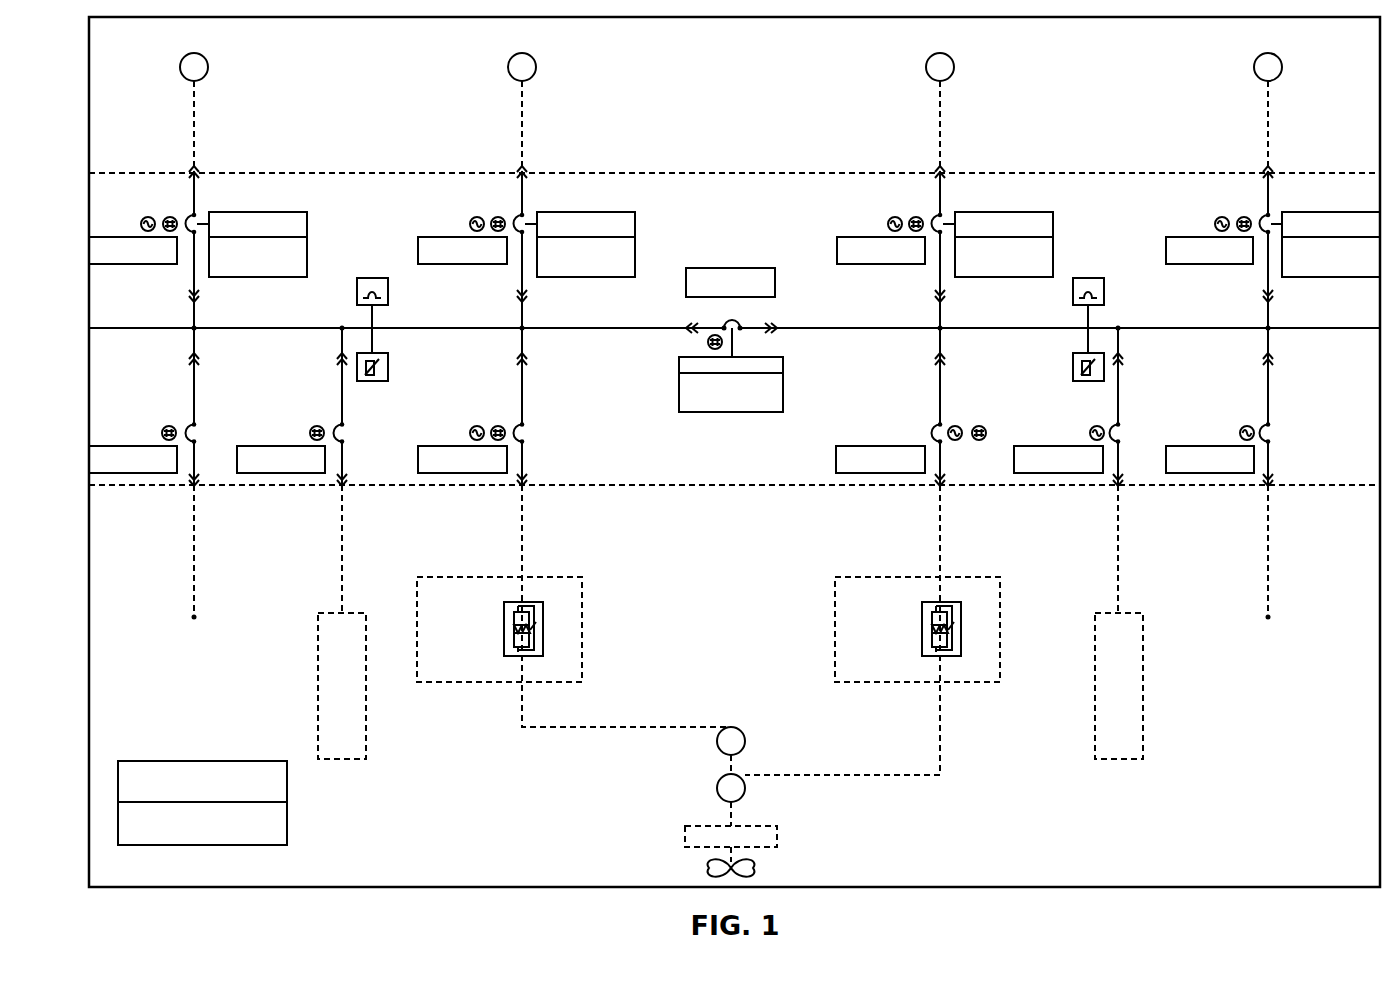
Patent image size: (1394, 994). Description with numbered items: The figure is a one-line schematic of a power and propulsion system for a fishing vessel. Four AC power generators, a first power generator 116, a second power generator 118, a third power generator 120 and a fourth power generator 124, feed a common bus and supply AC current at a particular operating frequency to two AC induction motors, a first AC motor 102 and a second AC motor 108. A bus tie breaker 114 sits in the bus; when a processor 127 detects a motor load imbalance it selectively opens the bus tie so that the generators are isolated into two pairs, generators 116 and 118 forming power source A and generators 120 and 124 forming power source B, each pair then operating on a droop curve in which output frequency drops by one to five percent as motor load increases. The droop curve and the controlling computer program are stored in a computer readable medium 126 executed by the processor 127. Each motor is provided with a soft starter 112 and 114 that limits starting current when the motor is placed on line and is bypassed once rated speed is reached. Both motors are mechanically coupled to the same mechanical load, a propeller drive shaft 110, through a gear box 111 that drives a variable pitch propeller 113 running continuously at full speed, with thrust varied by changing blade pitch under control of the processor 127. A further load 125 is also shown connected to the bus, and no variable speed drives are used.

The first AC motor 102 is at (717, 740).
The second AC motor 108 is at (745, 790).
The propeller drive shaft 110 is at (728, 812).
The gear box 111 is at (767, 835).
The soft starter 112 is at (563, 621).
The propeller 113 is at (710, 866).
The bus tie breaker 114 is at (698, 389).
The power generator 1 116 is at (208, 63).
The power generator 2 118 is at (536, 63).
The power generator 3 120 is at (954, 63).
The power generator 4 124 is at (1282, 63).
The load 125 is at (368, 735).
The computer readable medium 126 is at (289, 782).
The processor 127 is at (289, 826).